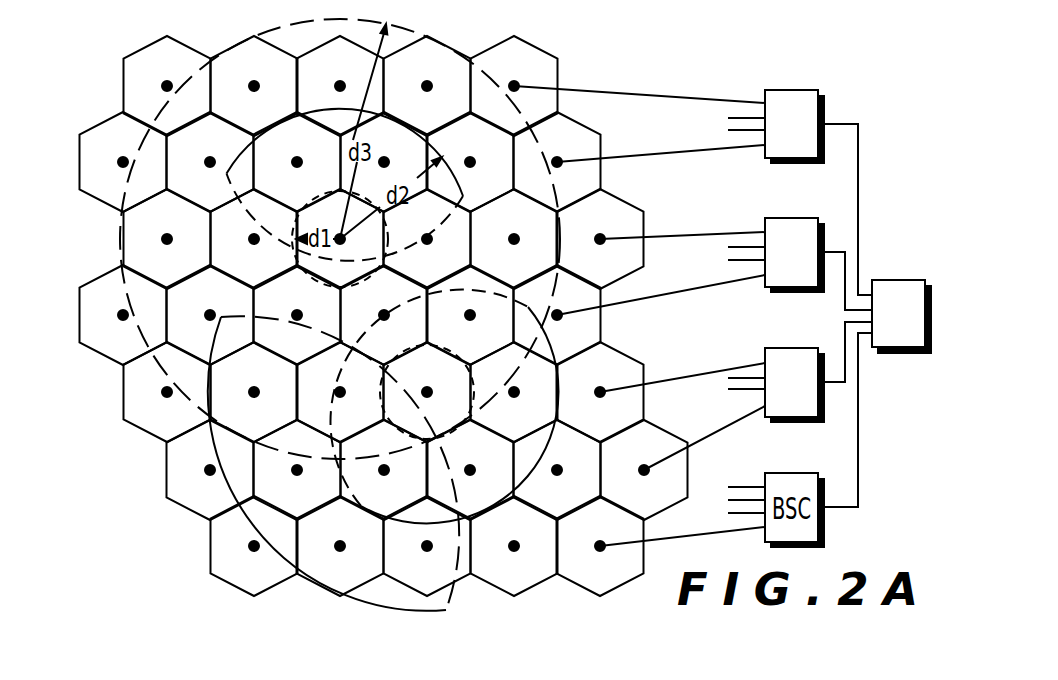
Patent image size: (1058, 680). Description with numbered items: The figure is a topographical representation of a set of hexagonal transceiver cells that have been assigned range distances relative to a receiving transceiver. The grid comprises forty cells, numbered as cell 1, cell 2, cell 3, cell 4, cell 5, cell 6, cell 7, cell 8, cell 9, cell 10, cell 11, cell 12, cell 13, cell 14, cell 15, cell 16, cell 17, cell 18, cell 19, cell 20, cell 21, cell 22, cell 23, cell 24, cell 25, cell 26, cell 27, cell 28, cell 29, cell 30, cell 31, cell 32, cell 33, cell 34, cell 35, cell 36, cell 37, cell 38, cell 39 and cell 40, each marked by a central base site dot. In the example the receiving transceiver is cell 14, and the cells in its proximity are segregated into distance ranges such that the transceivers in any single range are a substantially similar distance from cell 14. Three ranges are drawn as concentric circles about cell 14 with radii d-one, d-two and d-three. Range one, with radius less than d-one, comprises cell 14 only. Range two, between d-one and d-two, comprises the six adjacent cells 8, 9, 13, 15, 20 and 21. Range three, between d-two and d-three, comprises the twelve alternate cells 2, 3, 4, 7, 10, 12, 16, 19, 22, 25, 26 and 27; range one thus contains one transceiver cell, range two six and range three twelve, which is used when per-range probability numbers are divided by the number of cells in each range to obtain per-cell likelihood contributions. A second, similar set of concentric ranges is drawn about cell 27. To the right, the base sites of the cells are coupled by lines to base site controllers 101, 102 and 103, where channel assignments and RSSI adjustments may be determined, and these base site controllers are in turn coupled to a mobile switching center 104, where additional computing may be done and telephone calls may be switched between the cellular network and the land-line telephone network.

The cell 1 is at (167, 86).
The cell 2 is at (254, 86).
The cell 3 is at (340, 86).
The cell 4 is at (427, 86).
The cell 5 is at (514, 86).
The cell 6 is at (123, 162).
The cell 7 is at (210, 162).
The cell 8 is at (297, 162).
The cell 9 is at (384, 162).
The cell 10 is at (470, 162).
The cell 11 is at (557, 162).
The cell 12 is at (167, 239).
The cell 13 is at (254, 239).
The receiving transceiver cell 14 is at (340, 239).
The cell 15 is at (427, 239).
The cell 16 is at (514, 239).
The cell 17 is at (600, 239).
The cell 18 is at (123, 315).
The cell 19 is at (210, 315).
The cell 20 is at (297, 315).
The cell 21 is at (384, 315).
The cell 22 is at (470, 315).
The cell 23 is at (557, 315).
The cell 24 is at (167, 392).
The cell 25 is at (254, 392).
The cell 26 is at (340, 392).
The cell 27 is at (427, 392).
The cell 28 is at (514, 392).
The cell 29 is at (600, 392).
The cell 30 is at (210, 470).
The cell 31 is at (297, 470).
The cell 32 is at (384, 470).
The cell 33 is at (470, 470).
The cell 34 is at (557, 470).
The cell 35 is at (644, 470).
The cell 36 is at (254, 546).
The cell 37 is at (340, 546).
The cell 38 is at (427, 546).
The cell 39 is at (514, 546).
The cell 40 is at (600, 546).
The base site controller 101 is at (792, 90).
The base site controller 102 is at (792, 218).
The base site controller 103 is at (792, 348).
The mobile switching center 104 is at (891, 280).